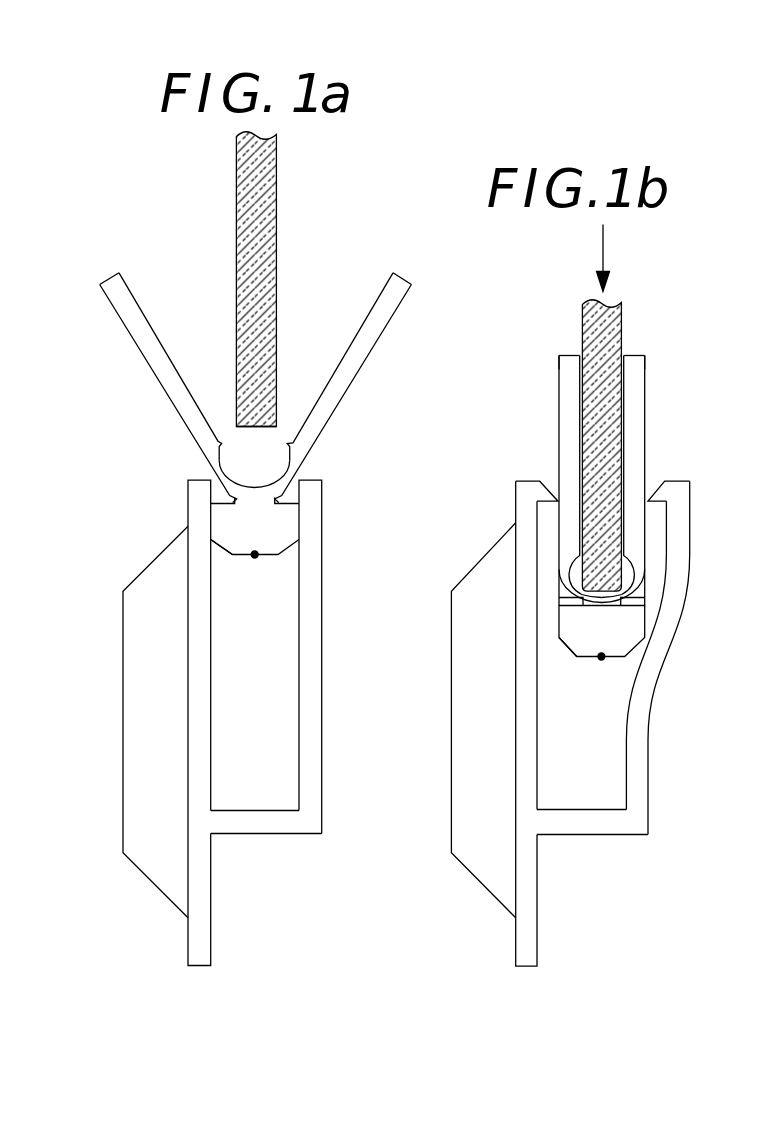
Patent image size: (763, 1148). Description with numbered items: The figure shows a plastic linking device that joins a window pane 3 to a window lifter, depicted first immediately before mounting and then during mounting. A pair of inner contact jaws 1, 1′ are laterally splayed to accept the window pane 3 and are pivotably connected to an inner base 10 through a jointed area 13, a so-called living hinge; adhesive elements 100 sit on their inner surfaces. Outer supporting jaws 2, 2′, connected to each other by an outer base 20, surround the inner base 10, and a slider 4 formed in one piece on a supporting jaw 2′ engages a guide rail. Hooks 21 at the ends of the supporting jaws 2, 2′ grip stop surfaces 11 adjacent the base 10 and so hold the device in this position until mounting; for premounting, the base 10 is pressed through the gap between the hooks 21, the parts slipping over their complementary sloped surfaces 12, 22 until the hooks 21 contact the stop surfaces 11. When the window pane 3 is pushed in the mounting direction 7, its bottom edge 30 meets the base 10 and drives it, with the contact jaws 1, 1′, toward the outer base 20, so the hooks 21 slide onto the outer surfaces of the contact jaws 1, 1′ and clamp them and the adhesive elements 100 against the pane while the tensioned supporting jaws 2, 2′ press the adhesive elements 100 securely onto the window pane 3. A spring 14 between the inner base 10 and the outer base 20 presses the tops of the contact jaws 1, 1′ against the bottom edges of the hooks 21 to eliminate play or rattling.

In FIG. 1A, the adhesive elements 100 is at (149, 317).
In FIG. 1B, the clamping element 1 is at (657, 441).
In FIG. 1A, the inner contact jaw 1′ is at (175, 395).
In FIG. 1B, the inner contact jaw 1′ is at (568, 388).
In FIG. 1A, the window pane 3 is at (245, 228).
In FIG. 1B, the window pane 3 is at (592, 330).
In FIG. 1A, the bottom edge of the window pane 30 is at (241, 430).
In FIG. 1A, the jointed area 13 is at (196, 459).
In FIG. 1A, the base 10 is at (273, 530).
In FIG. 1B, the base 10 is at (617, 622).
In FIG. 1A, the sloped surface 12 is at (217, 545).
In FIG. 1B, the sloped surface 12 is at (567, 650).
In FIG. 1A, the spring 14 is at (258, 560).
In FIG. 1B, the profile channel 2 is at (673, 492).
In FIG. 1A, the outer supporting jaw 2′ is at (200, 632).
In FIG. 1B, the outer supporting jaw 2′ is at (527, 631).
In FIG. 1A, the base 20 is at (261, 824).
In FIG. 1B, the base 20 is at (588, 825).
In FIG. 1A, the slider 4 is at (150, 685).
In FIG. 1B, the slider 4 is at (482, 855).
In FIG. 1B, the mounting direction 7 is at (603, 249).
In FIG. 1B, the sloped surface 22 is at (552, 479).
In FIG. 1B, the hooks 21 is at (528, 492).
In FIG. 1B, the stop surfaces 11 is at (566, 598).